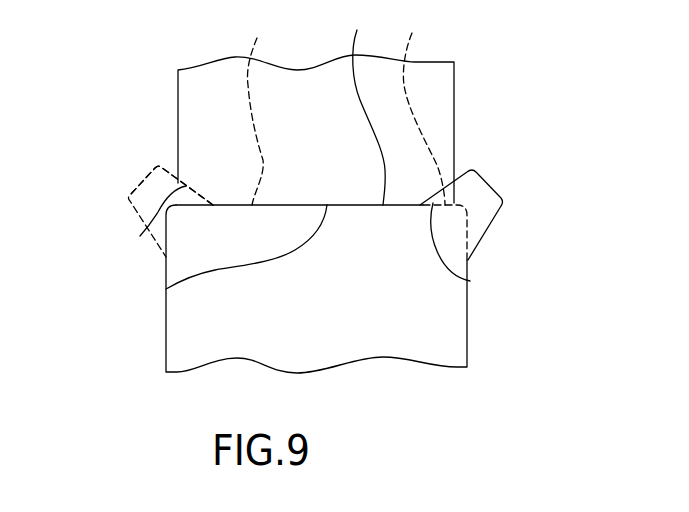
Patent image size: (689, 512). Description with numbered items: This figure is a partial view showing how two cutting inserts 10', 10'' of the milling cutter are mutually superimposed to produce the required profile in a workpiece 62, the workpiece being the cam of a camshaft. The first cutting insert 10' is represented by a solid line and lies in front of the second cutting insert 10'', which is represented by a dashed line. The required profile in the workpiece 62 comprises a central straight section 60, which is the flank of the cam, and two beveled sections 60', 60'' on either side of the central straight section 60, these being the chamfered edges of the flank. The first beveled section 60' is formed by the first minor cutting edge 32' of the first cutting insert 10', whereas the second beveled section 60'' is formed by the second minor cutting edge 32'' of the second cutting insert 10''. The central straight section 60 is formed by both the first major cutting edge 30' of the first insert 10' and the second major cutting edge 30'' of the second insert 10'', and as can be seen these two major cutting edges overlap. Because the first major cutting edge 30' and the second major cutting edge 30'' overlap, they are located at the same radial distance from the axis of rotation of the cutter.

The first cutting insert 10' is at (358, 289).
The second cutting insert 10'' is at (134, 196).
The first major cutting edge 30' is at (361, 104).
The second major cutting edge 30'' is at (354, 104).
The first minor cutting edge 32' is at (489, 179).
The second minor cutting edge 32'' is at (151, 142).
The central straight section 60 is at (220, 267).
The first beveled section 60' is at (488, 250).
The second beveled section 60'' is at (120, 224).
The workpiece 62 is at (428, 100).